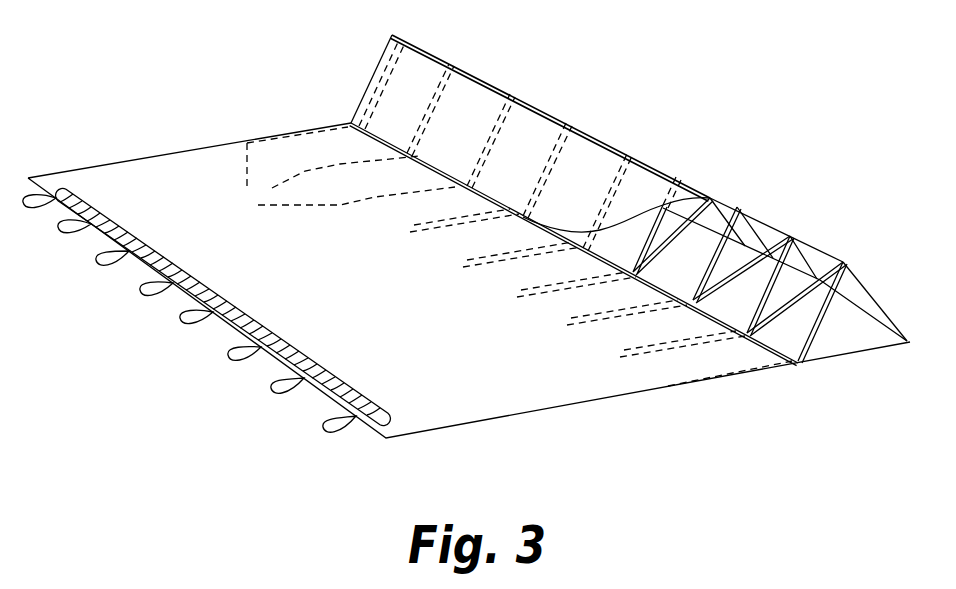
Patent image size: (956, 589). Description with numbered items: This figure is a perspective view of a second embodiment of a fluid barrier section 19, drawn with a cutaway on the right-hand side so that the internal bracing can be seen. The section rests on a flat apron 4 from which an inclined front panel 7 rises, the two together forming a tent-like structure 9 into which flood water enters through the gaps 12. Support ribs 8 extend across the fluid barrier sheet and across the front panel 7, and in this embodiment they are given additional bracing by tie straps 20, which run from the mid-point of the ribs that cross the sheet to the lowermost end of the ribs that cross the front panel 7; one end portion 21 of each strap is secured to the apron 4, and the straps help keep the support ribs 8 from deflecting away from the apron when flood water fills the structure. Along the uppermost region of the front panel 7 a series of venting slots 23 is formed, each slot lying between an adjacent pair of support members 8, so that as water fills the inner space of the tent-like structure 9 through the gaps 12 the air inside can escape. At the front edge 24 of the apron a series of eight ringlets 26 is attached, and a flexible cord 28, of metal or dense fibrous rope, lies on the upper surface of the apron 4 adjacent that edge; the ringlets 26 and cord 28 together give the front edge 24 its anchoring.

The apron 4 is at (456, 405).
The front panel 7 is at (580, 150).
The support ribs 8 is at (779, 224).
The tent-like structure 9 is at (738, 195).
The gaps 12 is at (432, 157).
The fluid barrier section 19 is at (748, 100).
The tie straps 20 is at (827, 357).
The end portion 21 is at (270, 188).
The venting slots 23 is at (523, 99).
The front edge 24 is at (228, 328).
The ringlets 26 is at (180, 320).
The flexible cord 28 is at (82, 196).